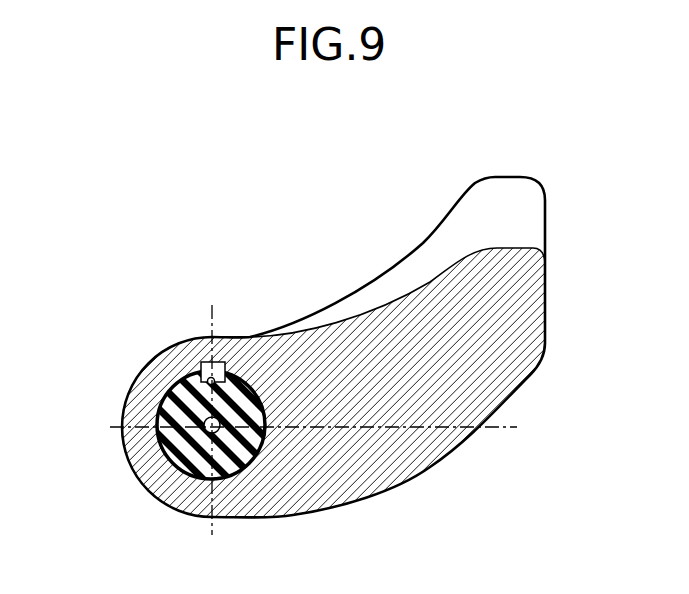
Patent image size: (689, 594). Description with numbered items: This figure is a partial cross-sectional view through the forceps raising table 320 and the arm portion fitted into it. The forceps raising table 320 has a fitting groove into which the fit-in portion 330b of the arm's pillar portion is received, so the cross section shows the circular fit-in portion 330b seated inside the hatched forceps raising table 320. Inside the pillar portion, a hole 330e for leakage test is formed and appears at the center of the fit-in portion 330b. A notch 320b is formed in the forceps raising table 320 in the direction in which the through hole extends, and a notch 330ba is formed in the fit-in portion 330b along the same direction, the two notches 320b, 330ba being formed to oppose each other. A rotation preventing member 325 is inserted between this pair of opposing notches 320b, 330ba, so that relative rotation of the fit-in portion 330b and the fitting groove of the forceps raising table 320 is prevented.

The forceps raising table 320 is at (520, 175).
The notch 320b is at (204, 359).
The rotation preventing member 325 is at (193, 366).
The fit-in portion 330b is at (156, 406).
The notch 330ba is at (207, 381).
The hole for leakage test 330e is at (215, 433).